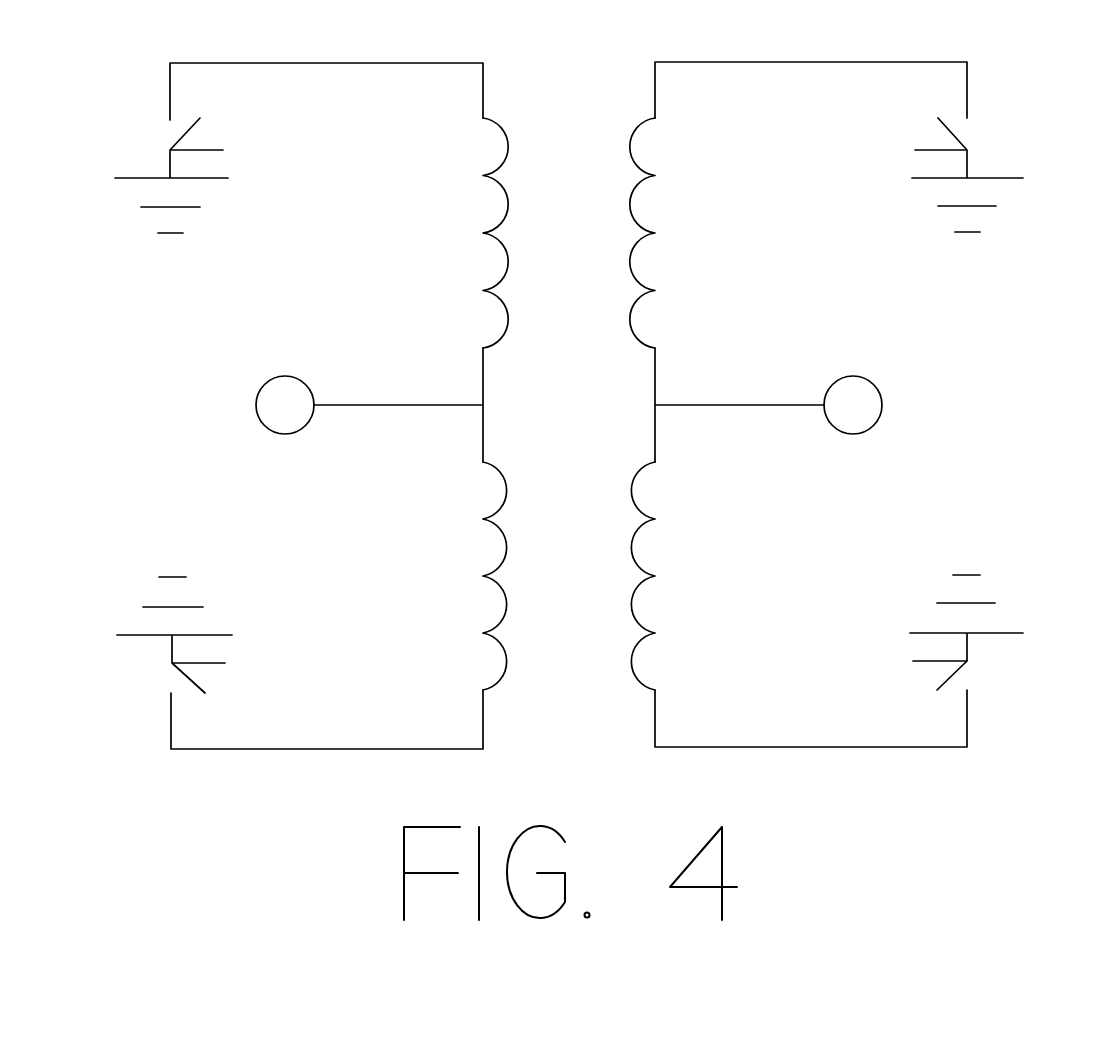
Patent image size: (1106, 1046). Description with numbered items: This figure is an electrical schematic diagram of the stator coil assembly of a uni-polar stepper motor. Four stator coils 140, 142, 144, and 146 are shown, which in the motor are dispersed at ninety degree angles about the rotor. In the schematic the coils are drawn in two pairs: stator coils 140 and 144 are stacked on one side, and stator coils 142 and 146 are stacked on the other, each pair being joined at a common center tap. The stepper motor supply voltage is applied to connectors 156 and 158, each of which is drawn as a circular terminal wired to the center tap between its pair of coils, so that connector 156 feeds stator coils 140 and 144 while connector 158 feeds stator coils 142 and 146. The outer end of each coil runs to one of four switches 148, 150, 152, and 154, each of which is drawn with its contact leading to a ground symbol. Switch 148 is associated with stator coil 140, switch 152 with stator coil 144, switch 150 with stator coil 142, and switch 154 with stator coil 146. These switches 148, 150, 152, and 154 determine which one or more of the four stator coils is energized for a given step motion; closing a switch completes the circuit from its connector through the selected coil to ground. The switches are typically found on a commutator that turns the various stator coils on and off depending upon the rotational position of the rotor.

The stator coil 140 is at (483, 290).
The stator coil 142 is at (655, 290).
The stator coil 144 is at (483, 520).
The stator coil 146 is at (655, 520).
The switch 148 is at (218, 175).
The switch 150 is at (915, 175).
The switch 152 is at (218, 635).
The switch 154 is at (914, 632).
The connector 156 is at (285, 405).
The connector 158 is at (853, 405).